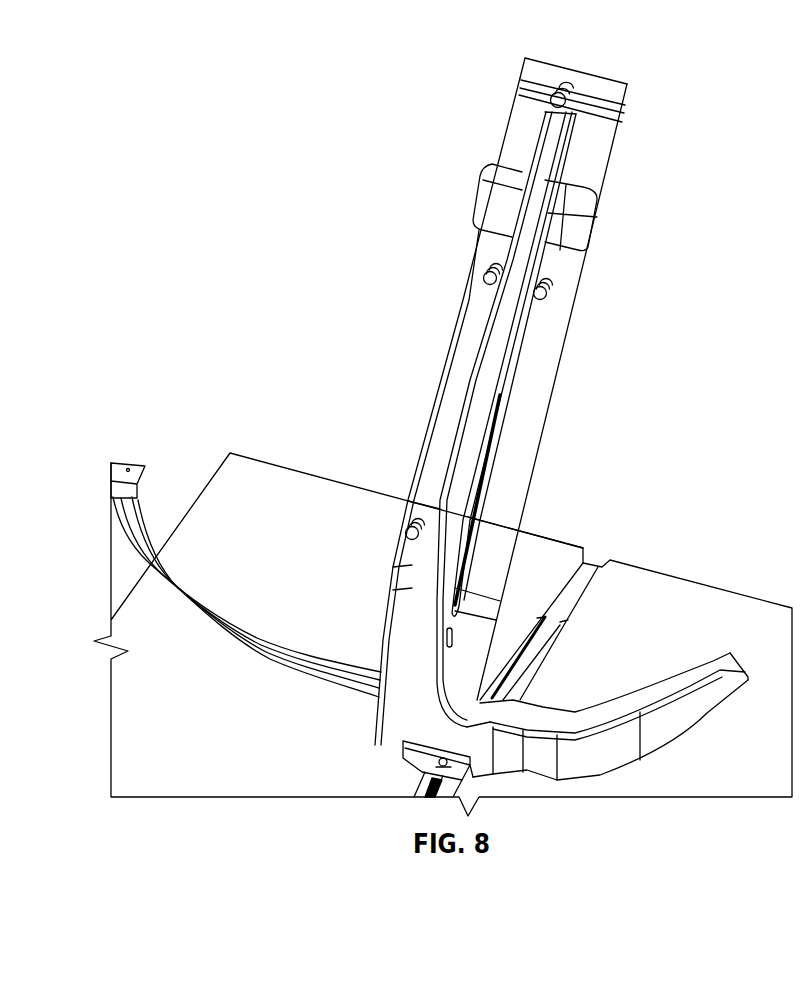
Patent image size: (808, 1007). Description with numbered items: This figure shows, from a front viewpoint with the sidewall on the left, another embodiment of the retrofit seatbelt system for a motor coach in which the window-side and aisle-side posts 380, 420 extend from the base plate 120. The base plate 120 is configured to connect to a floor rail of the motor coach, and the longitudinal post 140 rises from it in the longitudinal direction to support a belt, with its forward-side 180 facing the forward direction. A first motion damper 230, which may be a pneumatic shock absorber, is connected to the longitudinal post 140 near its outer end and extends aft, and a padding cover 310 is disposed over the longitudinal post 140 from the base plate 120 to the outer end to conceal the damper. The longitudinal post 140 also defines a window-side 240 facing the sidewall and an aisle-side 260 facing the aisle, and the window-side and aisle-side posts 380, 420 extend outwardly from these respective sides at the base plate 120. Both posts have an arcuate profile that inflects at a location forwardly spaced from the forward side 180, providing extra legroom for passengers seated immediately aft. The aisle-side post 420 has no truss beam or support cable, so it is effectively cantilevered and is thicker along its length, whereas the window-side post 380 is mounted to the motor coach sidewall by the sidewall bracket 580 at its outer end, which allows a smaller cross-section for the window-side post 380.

The base plate 120 is at (388, 742).
The longitudinal post 140 is at (503, 470).
The forward-side 180 is at (477, 417).
The first motion damper 230 is at (575, 88).
The window-side 240 is at (432, 480).
The aisle-side 260 is at (472, 543).
The padding cover 310 is at (613, 156).
The window-side post 380 is at (227, 610).
The aisle-side post 420 is at (665, 740).
The sidewall bracket 580 is at (127, 480).